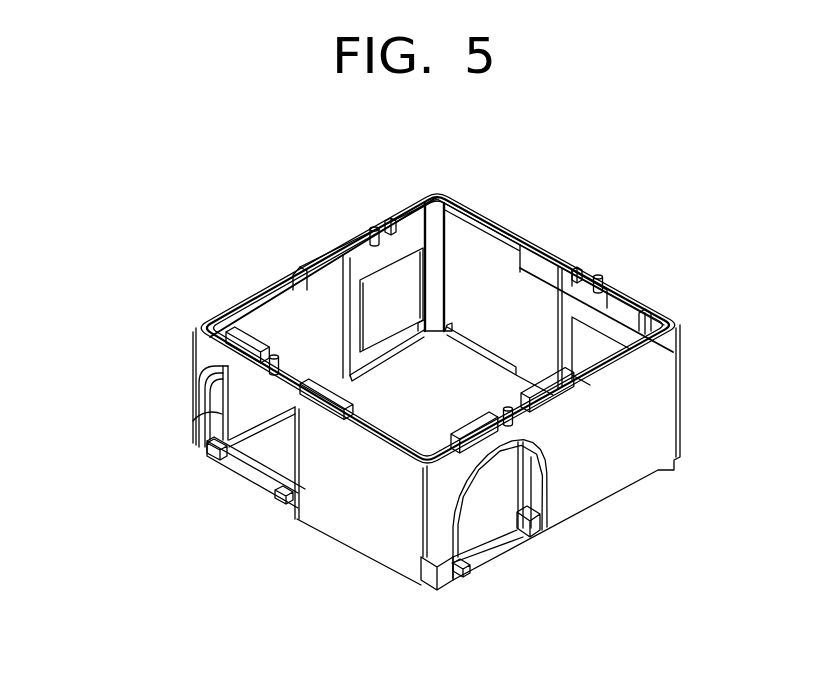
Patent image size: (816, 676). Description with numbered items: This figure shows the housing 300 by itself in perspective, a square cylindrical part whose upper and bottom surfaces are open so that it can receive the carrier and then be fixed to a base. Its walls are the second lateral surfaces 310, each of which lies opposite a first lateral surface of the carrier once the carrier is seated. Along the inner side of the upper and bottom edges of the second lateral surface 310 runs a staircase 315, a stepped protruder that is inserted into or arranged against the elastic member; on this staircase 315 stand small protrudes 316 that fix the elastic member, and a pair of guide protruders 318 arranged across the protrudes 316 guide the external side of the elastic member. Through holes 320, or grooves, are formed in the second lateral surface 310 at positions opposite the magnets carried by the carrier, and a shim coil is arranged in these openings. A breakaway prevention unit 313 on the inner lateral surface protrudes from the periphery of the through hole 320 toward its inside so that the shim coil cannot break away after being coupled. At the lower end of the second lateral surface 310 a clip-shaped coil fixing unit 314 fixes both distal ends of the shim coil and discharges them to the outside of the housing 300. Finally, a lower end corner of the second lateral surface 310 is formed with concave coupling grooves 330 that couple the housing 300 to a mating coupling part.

The housing 300 is at (165, 373).
The second lateral surface 310 is at (610, 453).
The breakaway prevention unit 313 is at (200, 420).
The coil fixing unit 314 is at (463, 572).
The staircase 315 is at (267, 308).
The protrude 316 is at (278, 356).
The guide protruders 318 is at (323, 392).
The through holes 320 is at (523, 538).
The coupling grooves 330 is at (430, 569).